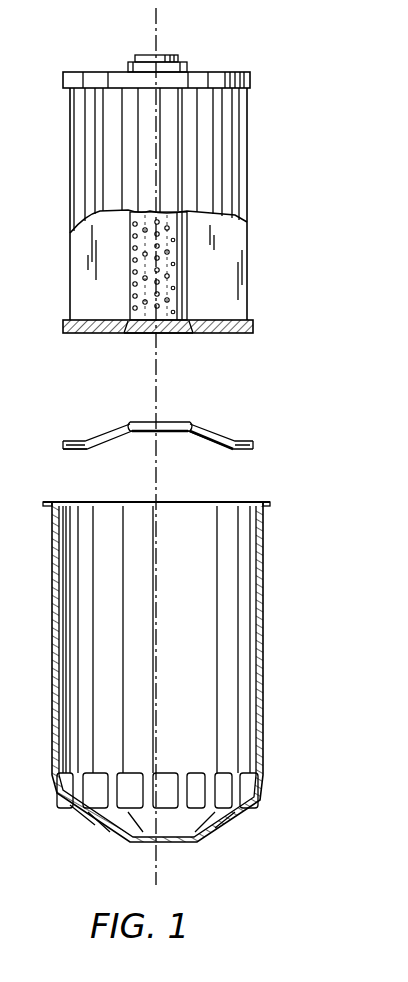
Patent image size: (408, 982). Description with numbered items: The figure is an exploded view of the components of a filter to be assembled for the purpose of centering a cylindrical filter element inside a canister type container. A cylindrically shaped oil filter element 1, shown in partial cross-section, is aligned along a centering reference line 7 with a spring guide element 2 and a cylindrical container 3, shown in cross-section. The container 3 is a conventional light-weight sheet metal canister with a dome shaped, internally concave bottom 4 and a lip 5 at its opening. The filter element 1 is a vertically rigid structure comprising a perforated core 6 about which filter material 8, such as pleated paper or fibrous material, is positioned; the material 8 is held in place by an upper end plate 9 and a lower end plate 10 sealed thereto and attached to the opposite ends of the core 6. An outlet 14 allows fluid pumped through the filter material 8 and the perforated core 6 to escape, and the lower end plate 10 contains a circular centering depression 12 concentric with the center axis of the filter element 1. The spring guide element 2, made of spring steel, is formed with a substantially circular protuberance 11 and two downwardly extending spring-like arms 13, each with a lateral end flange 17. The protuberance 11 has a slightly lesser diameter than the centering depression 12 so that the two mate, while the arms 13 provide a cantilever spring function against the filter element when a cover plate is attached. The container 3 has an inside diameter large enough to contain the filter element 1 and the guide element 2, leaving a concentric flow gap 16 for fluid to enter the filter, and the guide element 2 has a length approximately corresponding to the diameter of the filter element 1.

The oil filter element 1 is at (249, 112).
The spring guide element 2 is at (157, 438).
The cylindrical container 3 is at (265, 633).
The bottom 4 is at (215, 838).
The lip 5 is at (272, 508).
The perforated core 6 is at (189, 268).
The centering reference line 7 is at (160, 872).
The filter material 8 is at (240, 248).
The upper end plate 9 is at (92, 72).
The lower end plate 10 is at (245, 335).
The circular protuberance 11 is at (187, 420).
The circular centering depression 12 is at (176, 330).
The spring-like arms 13 is at (115, 428).
The outlet 14 is at (150, 55).
The concentric flow gap 16 is at (63, 440).
The lateral end flange 17 is at (66, 452).